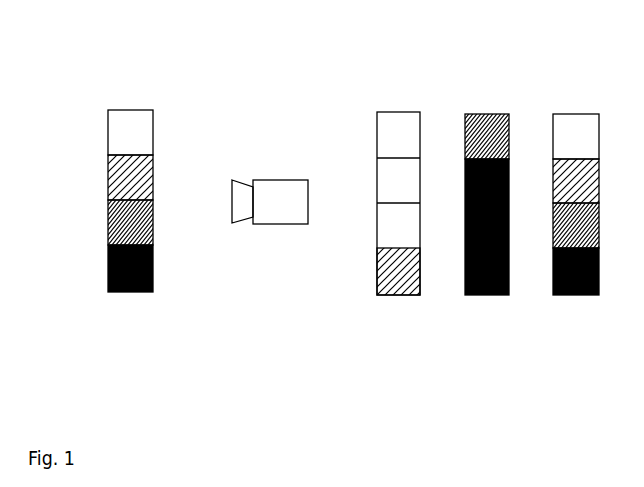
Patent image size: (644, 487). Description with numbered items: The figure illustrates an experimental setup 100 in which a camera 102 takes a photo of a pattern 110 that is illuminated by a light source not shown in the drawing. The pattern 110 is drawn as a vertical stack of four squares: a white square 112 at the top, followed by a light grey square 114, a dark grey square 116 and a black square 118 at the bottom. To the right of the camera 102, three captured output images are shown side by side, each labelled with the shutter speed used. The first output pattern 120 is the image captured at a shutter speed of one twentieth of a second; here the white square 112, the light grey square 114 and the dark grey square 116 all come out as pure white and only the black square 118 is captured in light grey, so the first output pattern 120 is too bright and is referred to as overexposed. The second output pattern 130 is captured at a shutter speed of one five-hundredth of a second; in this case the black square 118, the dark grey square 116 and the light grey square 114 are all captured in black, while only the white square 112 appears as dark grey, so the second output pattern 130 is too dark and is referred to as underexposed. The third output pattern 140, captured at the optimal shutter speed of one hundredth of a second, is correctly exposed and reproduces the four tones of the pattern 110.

The experimental setup 100 is at (327, 165).
The camera 102 is at (279, 224).
The pattern 110 is at (104, 178).
The white square 112 is at (104, 132).
The light grey square 114 is at (104, 177).
The dark grey square 116 is at (104, 222).
The black square 118 is at (104, 268).
The first output pattern 120 is at (380, 196).
The second output pattern 130 is at (469, 196).
The third output pattern 140 is at (559, 196).